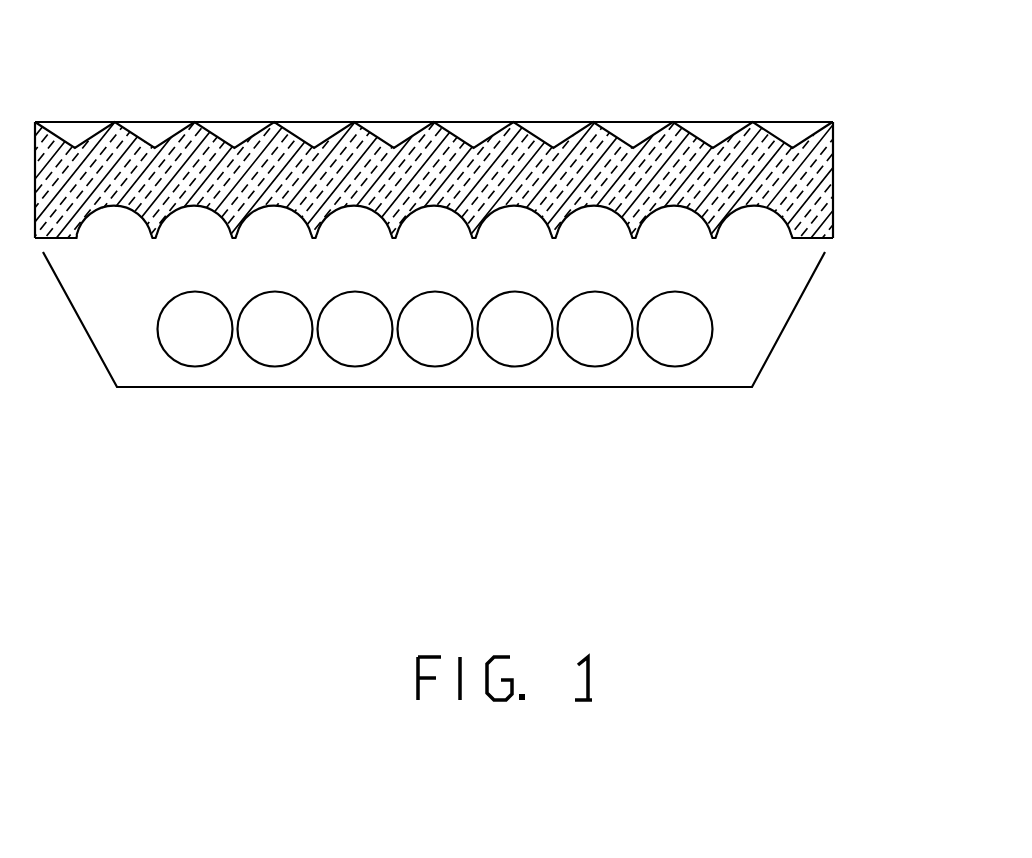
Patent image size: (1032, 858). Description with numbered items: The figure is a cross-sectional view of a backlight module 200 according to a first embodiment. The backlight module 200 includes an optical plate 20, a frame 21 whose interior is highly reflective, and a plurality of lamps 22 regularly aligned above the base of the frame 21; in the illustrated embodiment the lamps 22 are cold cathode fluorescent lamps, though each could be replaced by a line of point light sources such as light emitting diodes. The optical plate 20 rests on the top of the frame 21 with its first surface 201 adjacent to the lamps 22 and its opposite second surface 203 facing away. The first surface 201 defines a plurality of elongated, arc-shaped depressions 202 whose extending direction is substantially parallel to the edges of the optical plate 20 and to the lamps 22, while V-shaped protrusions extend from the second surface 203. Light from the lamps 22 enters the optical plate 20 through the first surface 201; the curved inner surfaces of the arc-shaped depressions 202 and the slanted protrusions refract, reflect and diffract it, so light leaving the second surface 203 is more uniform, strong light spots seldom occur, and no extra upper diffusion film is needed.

The backlight module 200 is at (480, 244).
The optical plate 20 is at (480, 211).
The second surface 203 is at (636, 121).
The first surface 201 is at (475, 283).
The elongated, arc-shaped depressions 202 is at (673, 223).
The frame 21 is at (462, 360).
The lamps 22 is at (675, 340).